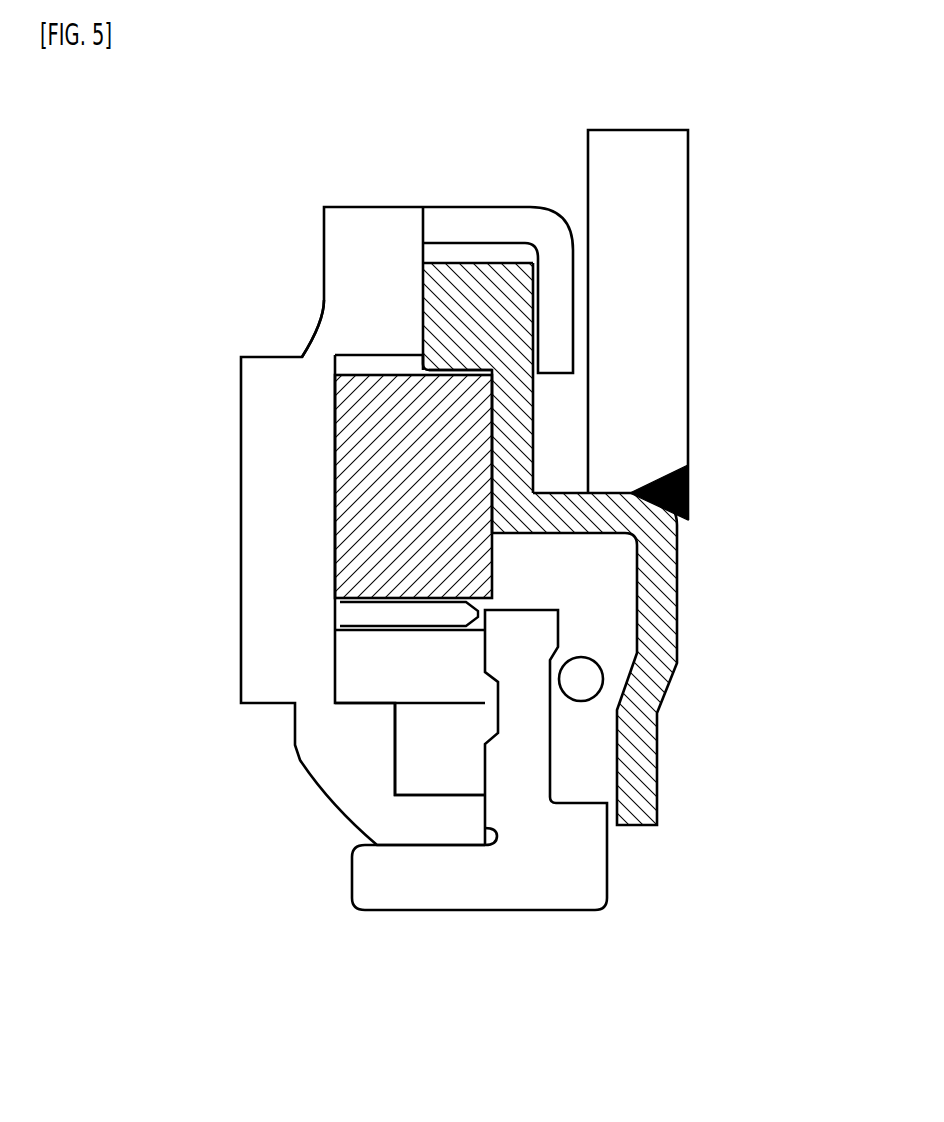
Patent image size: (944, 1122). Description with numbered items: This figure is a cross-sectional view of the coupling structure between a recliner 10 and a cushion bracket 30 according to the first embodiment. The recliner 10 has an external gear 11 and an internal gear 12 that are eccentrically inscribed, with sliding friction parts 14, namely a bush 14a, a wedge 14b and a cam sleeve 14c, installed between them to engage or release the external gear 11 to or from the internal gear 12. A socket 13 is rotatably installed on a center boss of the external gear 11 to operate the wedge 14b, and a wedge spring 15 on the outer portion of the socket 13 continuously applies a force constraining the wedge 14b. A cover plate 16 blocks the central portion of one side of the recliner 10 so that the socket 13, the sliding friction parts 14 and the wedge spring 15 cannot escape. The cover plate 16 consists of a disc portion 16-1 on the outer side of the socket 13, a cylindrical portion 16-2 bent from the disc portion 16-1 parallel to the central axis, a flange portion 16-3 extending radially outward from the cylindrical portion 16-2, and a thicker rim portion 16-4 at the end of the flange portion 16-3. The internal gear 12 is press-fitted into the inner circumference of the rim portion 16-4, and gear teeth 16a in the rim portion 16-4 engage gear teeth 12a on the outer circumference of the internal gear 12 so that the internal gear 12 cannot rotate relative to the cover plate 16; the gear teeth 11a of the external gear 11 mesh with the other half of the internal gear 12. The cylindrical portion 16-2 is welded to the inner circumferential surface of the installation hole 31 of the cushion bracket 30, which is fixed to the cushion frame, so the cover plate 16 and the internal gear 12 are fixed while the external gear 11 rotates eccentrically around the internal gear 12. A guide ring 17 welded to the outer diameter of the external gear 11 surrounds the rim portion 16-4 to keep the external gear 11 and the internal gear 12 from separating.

The recliner 10 is at (240, 330).
The external gear 11 is at (283, 548).
The gear teeth of the external gear 11a is at (367, 353).
The internal gear 12 is at (378, 485).
The gear teeth of the internal gear 12a is at (367, 383).
The socket 13 is at (570, 865).
The sliding friction parts 14 is at (284, 700).
The bush 14a is at (397, 615).
The wedge 14b is at (405, 675).
The cam sleeve 14c is at (417, 763).
The wedge spring 15 is at (581, 679).
The cover plate 16 is at (472, 516).
The disc portion 16-1 is at (677, 595).
The cylindrical portion 16-2 is at (615, 540).
The flange portion 16-3 is at (520, 397).
The rim portion 16-4 is at (463, 287).
The gear teeth of the cover plate 16a is at (457, 365).
The guide ring 17 is at (525, 223).
The cushion bracket 30 is at (657, 300).
The installation hole 31 is at (645, 462).